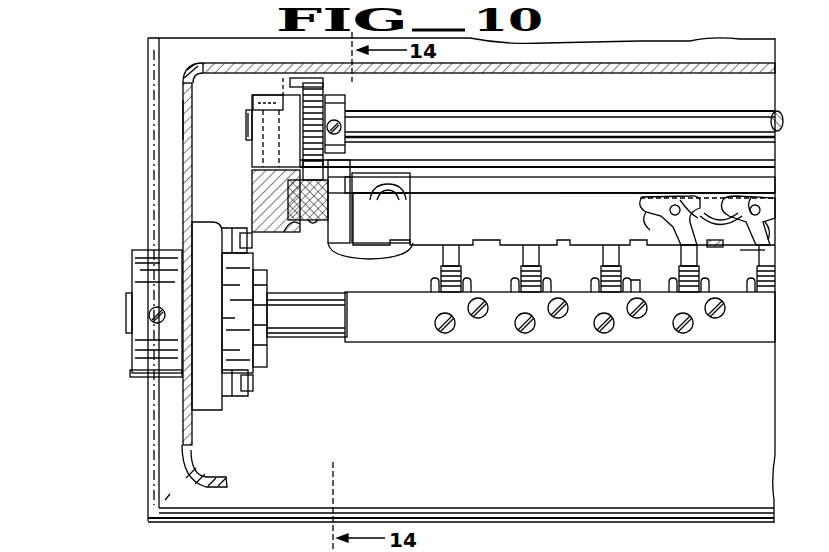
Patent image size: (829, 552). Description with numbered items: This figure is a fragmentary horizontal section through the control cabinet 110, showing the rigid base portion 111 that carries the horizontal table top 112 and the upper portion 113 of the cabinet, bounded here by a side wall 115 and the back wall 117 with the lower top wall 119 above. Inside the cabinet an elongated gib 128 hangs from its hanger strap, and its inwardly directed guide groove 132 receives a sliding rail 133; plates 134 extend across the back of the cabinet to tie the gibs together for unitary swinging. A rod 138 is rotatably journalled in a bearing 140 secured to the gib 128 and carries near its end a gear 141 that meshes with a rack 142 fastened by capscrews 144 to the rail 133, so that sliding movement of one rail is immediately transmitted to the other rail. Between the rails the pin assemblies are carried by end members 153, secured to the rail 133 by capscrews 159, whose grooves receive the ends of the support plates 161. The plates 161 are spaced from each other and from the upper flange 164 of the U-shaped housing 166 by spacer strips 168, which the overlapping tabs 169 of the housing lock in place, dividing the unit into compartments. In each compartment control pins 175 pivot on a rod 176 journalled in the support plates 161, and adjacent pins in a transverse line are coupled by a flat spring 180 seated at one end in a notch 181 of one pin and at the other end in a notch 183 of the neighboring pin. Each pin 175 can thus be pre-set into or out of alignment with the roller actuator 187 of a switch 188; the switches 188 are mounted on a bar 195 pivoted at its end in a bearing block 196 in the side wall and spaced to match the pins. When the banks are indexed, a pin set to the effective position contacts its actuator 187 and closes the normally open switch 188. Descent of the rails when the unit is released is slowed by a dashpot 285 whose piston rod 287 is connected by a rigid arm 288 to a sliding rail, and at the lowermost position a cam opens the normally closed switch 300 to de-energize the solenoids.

The control cabinet 110 is at (149, 420).
The rigid base portion 111 is at (150, 463).
The table top 112 is at (524, 411).
The upper portion 113 is at (182, 205).
The side wall 115 is at (182, 121).
The back wall 117 is at (249, 67).
The lower top wall 119 is at (245, 48).
The gib 128 is at (253, 181).
The guide groove 132 is at (285, 222).
The rail 133 is at (290, 192).
The plate 134 is at (558, 165).
The rod 138 is at (250, 126).
The bearing 140 is at (258, 154).
The gear 141 is at (335, 50).
The rack 142 is at (323, 167).
The capscrew 144 is at (313, 224).
The end member 153 is at (333, 243).
The capscrew 159 is at (331, 205).
The support plate 161 is at (748, 251).
The upper flange 164 is at (565, 228).
The U-shaped housing 166 is at (567, 196).
The spacer strip 168 is at (740, 224).
The overlapping tab 169 is at (628, 250).
The control pin 175 is at (680, 254).
The rod 176 is at (669, 210).
The flat spring 180 is at (648, 228).
The notch 181 is at (684, 200).
The notch 183 is at (770, 215).
The roller actuator 187 is at (452, 268).
The switch 188 is at (632, 288).
The bar 195 is at (409, 330).
The bearing block 196 is at (255, 381).
The dashpot 285 is at (445, 180).
The piston rod 287 is at (392, 200).
The rigid arm 288 is at (414, 184).
The switch 300 is at (345, 96).